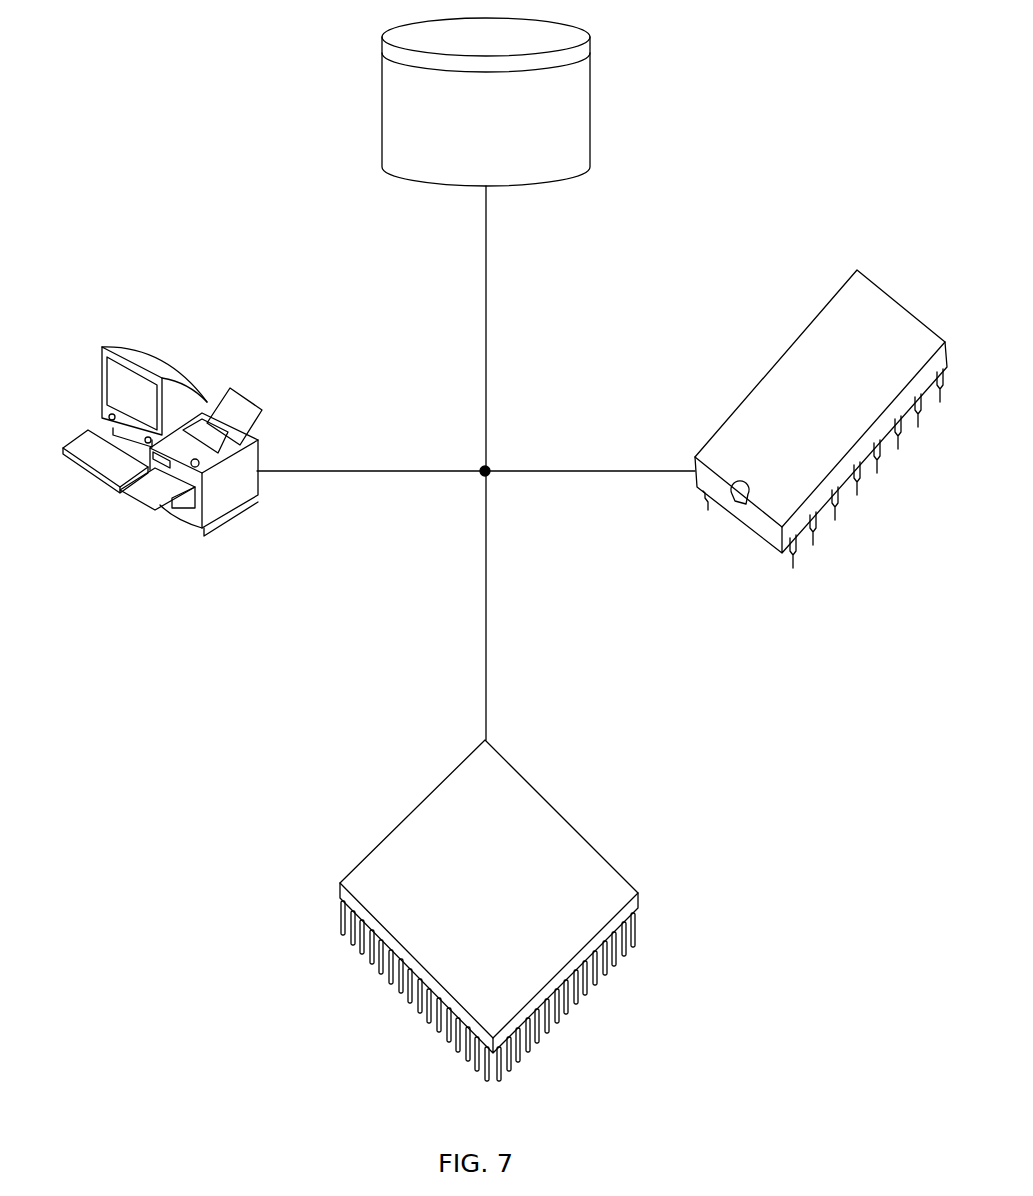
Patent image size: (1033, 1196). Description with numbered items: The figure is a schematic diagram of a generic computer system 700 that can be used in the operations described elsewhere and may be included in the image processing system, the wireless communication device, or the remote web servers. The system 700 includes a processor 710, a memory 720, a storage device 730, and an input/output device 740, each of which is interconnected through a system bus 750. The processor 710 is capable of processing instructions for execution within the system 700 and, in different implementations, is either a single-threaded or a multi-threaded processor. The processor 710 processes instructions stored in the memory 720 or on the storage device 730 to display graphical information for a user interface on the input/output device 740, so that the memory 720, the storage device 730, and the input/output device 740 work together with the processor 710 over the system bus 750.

The computer system 700 is at (188, 936).
The processor 710 is at (414, 808).
The memory 720 is at (777, 359).
The storage device 730 is at (382, 98).
The input/output device 740 is at (104, 344).
The system bus 750 is at (389, 469).